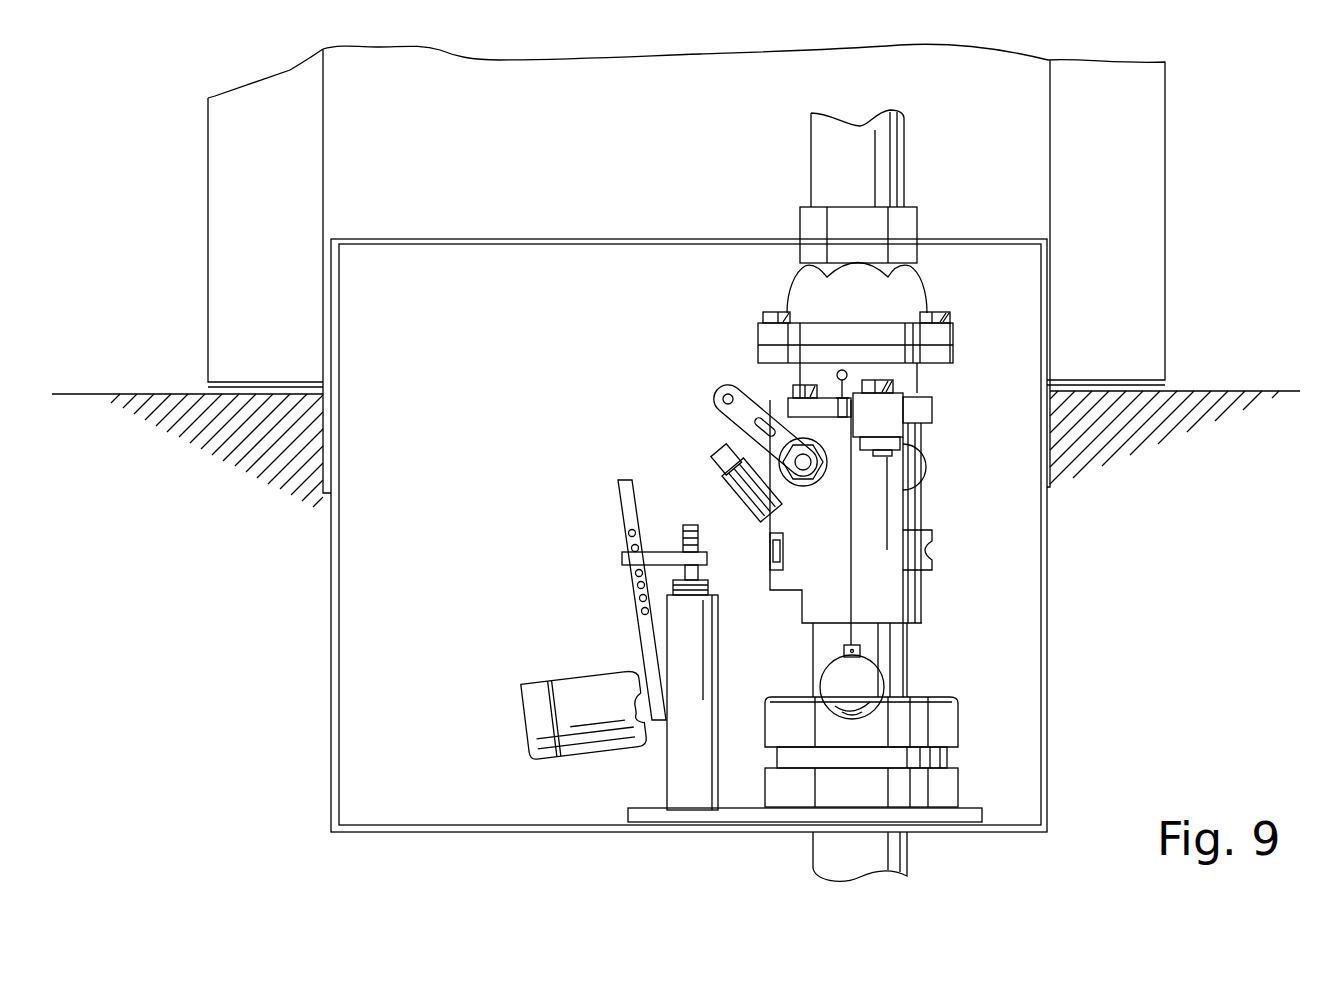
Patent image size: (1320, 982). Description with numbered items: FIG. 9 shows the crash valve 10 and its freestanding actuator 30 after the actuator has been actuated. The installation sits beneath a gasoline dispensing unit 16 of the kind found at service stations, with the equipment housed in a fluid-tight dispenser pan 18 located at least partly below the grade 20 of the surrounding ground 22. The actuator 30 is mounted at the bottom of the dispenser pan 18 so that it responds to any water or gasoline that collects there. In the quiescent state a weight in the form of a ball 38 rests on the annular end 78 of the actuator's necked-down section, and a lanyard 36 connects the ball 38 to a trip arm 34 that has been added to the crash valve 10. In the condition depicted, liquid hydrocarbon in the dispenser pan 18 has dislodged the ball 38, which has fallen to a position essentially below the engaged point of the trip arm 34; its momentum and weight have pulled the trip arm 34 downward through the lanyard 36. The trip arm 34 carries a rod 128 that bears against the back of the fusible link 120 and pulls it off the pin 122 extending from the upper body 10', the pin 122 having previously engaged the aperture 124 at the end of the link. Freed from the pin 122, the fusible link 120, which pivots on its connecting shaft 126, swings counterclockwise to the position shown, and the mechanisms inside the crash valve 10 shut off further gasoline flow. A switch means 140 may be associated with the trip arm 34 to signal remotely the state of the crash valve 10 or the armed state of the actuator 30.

The gasoline dispensing unit 16 is at (1160, 262).
The grade 20 is at (1238, 391).
The surrounding ground 22 is at (216, 430).
The dispenser pan 18 is at (1047, 707).
The upper body 10' is at (891, 331).
The crash valve 10 is at (935, 415).
The switch means 140 is at (890, 447).
The trip arm 34 is at (905, 485).
The lanyard 36 is at (857, 605).
The ball 38 is at (880, 683).
The actuator 30 is at (727, 681).
The annular end 78 is at (694, 522).
The fusible link 120 is at (740, 420).
The pin 122 is at (836, 376).
The aperture 124 is at (716, 396).
The connecting shaft 126 is at (800, 465).
The rod 128 is at (836, 405).